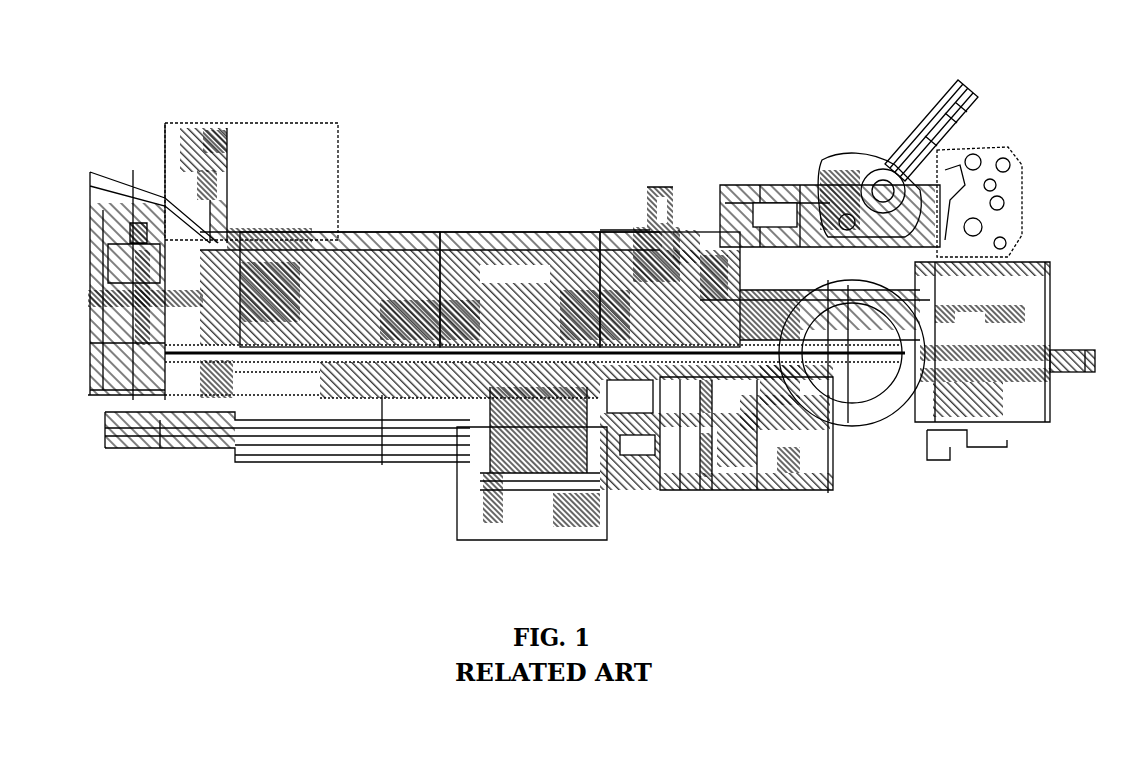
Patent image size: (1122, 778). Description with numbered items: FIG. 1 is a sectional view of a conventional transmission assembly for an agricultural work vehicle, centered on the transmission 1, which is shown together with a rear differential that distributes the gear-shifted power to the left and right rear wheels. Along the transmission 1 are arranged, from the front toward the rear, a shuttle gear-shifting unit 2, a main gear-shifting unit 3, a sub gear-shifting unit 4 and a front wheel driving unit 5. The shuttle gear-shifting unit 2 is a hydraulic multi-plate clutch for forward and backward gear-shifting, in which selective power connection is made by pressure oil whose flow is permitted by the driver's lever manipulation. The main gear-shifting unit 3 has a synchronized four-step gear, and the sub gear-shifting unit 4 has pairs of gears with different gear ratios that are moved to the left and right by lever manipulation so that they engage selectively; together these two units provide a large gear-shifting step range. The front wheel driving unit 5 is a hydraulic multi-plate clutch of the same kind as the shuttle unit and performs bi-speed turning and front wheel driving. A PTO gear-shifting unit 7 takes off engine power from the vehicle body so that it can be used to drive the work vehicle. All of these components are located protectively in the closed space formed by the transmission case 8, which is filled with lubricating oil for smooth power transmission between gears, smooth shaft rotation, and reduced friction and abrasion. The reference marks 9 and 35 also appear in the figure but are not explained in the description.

The transmission 1 is at (627, 56).
The shuttle gear-shifting unit 2 is at (278, 122).
The main gear-shifting unit 3 is at (390, 233).
The sub gear-shifting unit 4 is at (525, 232).
The front wheel driving unit 5 is at (642, 238).
The PTO gear-shifting unit 7 is at (1022, 262).
The transmission case 8 is at (427, 447).
The differential section 9 is at (885, 421).
The shaft 35 is at (382, 393).